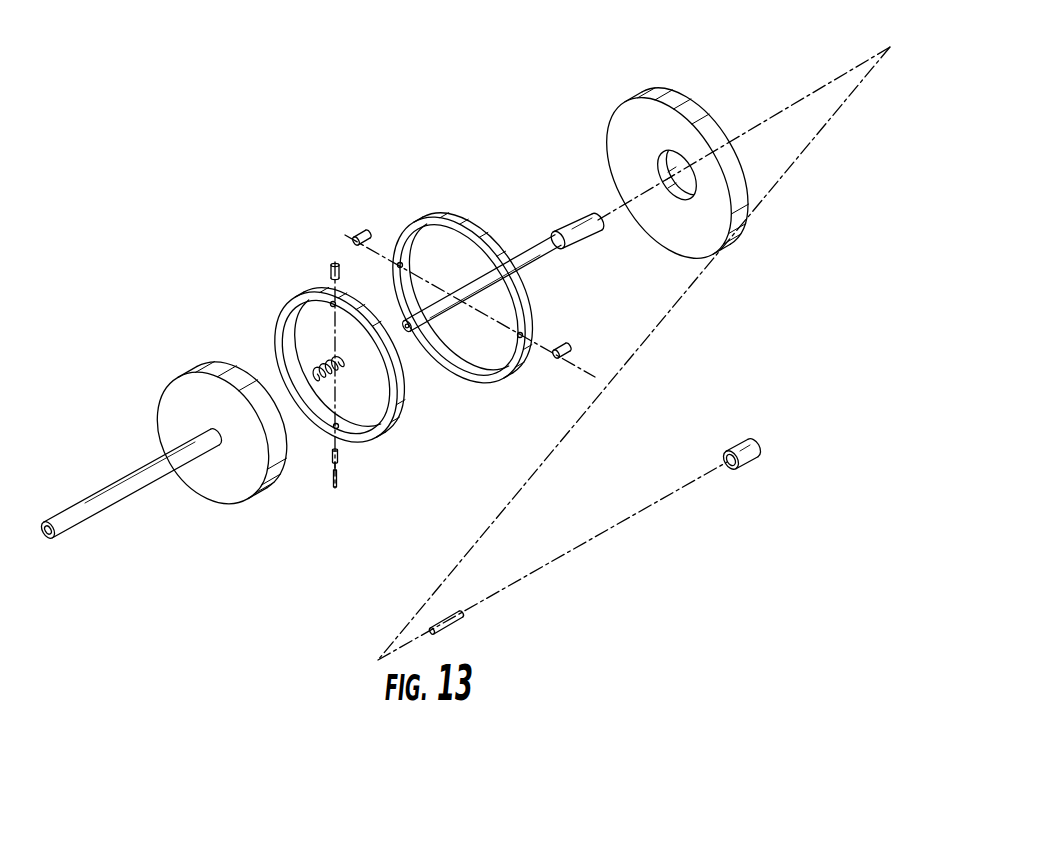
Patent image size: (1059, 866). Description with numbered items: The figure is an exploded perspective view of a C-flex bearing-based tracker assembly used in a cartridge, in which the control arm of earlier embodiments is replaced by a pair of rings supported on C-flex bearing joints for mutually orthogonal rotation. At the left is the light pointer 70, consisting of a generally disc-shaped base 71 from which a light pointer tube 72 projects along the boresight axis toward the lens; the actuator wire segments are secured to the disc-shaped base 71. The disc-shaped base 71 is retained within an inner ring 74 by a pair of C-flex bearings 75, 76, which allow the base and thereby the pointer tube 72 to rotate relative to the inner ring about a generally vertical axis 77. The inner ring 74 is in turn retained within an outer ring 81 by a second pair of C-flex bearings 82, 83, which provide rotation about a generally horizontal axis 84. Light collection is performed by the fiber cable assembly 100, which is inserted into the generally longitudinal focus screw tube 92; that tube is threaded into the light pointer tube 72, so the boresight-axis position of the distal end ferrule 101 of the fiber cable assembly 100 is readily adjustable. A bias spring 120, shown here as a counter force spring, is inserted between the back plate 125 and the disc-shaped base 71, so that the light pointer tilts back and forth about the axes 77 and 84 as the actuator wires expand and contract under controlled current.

The light pointer 70 is at (165, 395).
The disc-shaped base 71 is at (238, 378).
The light pointer tube 72 is at (93, 490).
The inner ring 74 is at (283, 286).
The C-flex bearing 75 is at (331, 272).
The C-flex bearing 76 is at (340, 457).
The generally vertical axis 77 is at (338, 477).
The outer ring 81 is at (452, 205).
The C-flex bearing 82 is at (565, 352).
The C-flex bearing 83 is at (360, 236).
The generally horizontal axis 84 is at (585, 375).
The focus screw tube 92 is at (569, 203).
The fiber cable assembly 100 is at (712, 618).
The distal end ferrule 101 is at (451, 627).
The bias spring 120 is at (305, 392).
The back plate 125 is at (710, 72).